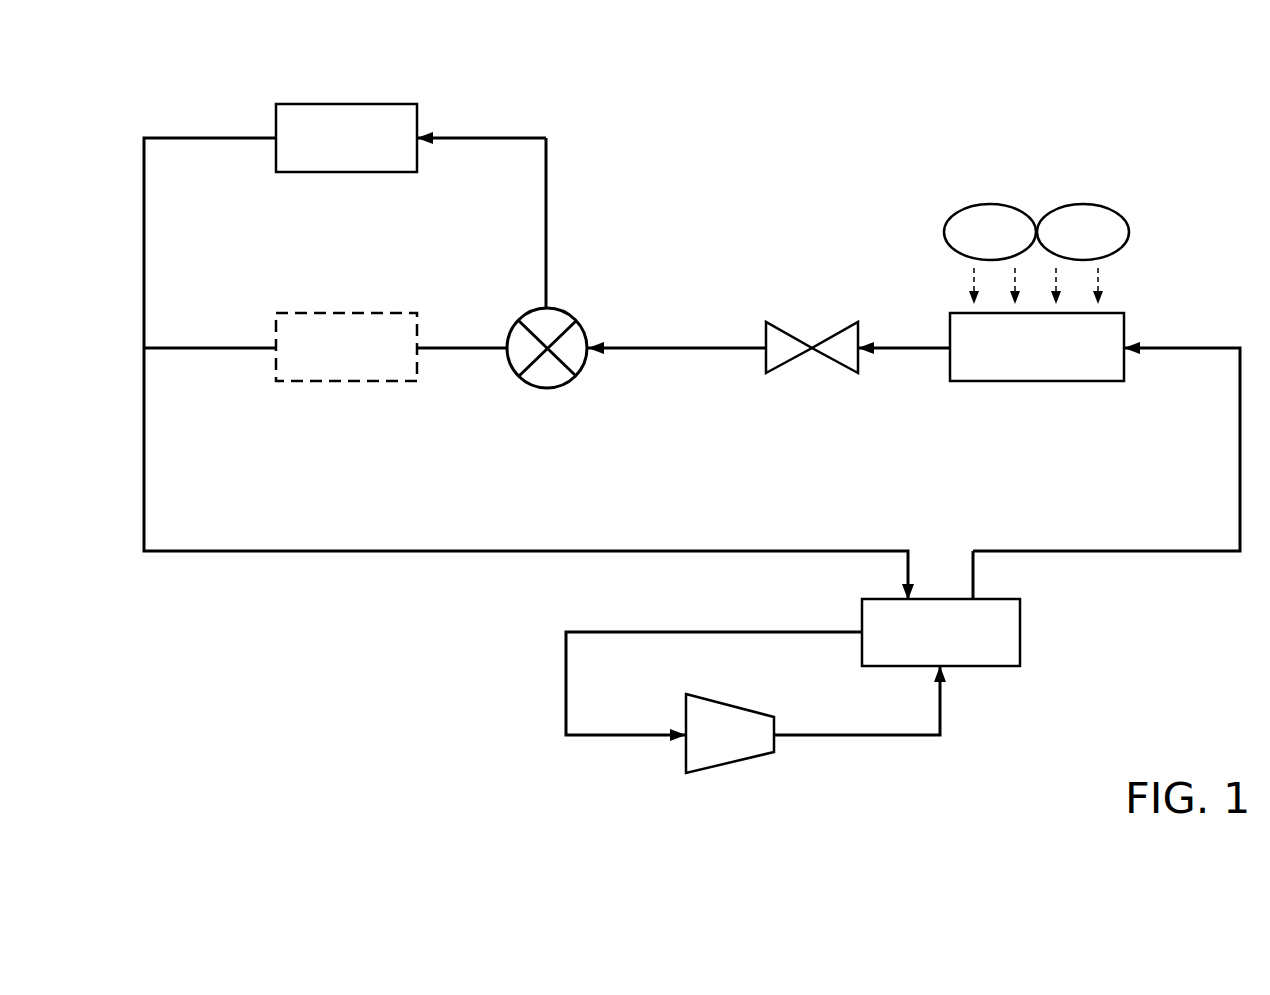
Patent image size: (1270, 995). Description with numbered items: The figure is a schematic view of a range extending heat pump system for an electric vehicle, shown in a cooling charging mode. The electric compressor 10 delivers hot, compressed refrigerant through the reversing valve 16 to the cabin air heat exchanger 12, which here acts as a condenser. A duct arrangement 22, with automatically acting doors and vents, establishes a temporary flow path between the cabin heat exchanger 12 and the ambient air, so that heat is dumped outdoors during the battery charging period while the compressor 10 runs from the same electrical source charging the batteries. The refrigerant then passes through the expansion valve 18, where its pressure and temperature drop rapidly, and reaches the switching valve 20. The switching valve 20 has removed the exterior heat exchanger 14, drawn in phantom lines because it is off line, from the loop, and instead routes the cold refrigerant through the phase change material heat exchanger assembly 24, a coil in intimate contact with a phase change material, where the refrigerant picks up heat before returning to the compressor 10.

The electric compressor 10 is at (739, 763).
The cabin air heat exchanger 12 is at (1080, 382).
The exterior heat exchanger 14 is at (372, 313).
The reversing valve 16 is at (978, 666).
The expansion valve 18 is at (787, 332).
The switching valve 20 is at (570, 312).
The duct arrangement 22 is at (1105, 205).
The phase change material heat exchanger assembly 24 is at (375, 104).